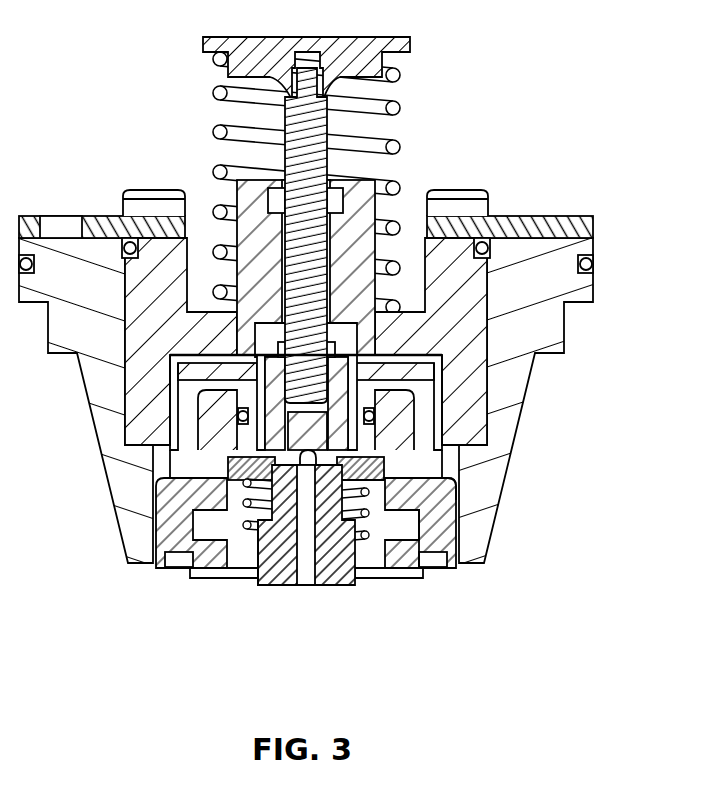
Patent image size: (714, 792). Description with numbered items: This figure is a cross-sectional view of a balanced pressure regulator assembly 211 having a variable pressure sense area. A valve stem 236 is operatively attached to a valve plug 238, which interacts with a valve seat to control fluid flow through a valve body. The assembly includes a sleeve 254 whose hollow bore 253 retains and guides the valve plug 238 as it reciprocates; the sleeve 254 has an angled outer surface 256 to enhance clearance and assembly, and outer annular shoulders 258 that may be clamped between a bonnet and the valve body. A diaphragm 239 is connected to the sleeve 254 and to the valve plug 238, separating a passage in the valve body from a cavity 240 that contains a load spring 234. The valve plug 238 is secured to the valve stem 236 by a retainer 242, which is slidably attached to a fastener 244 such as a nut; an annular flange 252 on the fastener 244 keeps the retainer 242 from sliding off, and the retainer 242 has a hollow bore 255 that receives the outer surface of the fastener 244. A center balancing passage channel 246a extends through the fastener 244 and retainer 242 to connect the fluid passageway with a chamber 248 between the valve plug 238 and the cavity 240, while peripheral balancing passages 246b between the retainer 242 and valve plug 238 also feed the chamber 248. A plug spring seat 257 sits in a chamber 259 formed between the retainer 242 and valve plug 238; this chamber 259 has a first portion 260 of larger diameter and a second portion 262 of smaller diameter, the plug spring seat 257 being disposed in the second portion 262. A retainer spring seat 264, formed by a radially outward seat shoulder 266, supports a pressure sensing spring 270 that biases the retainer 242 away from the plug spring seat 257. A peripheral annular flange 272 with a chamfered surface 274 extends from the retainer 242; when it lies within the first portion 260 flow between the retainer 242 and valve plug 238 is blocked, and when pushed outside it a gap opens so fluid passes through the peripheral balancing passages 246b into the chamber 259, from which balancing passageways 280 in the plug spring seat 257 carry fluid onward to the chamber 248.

The balanced pressure regulator assembly 211 is at (562, 52).
The load spring 234 is at (214, 90).
The valve stem 236 is at (318, 126).
The valve plug 238 is at (443, 487).
The diaphragm 239 is at (170, 468).
The cavity 240 is at (183, 134).
The retainer 242 is at (362, 586).
The fastener 244 is at (290, 582).
The center balancing passage channel 246a is at (306, 582).
The peripheral balancing passages 246b is at (185, 548).
The chamber 248 is at (180, 418).
The annular flange 252 is at (262, 580).
The hollow bore 253 is at (382, 458).
The sleeve 254 is at (553, 319).
The hollow bore 255 is at (380, 533).
The angled outer surface 256 is at (540, 384).
The plug spring seat 257 is at (235, 470).
The outer annular shoulders 258 is at (572, 300).
The chamber 259 is at (407, 523).
The first portion 260 is at (430, 562).
The second portion 262 is at (368, 492).
The retainer spring seat 264 is at (247, 568).
The seat shoulder 266 is at (168, 568).
The pressure sensing spring 270 is at (380, 469).
The peripheral annular flange 272 is at (424, 573).
The chamfered surface 274 is at (442, 576).
The balancing passageways 280 is at (245, 440).